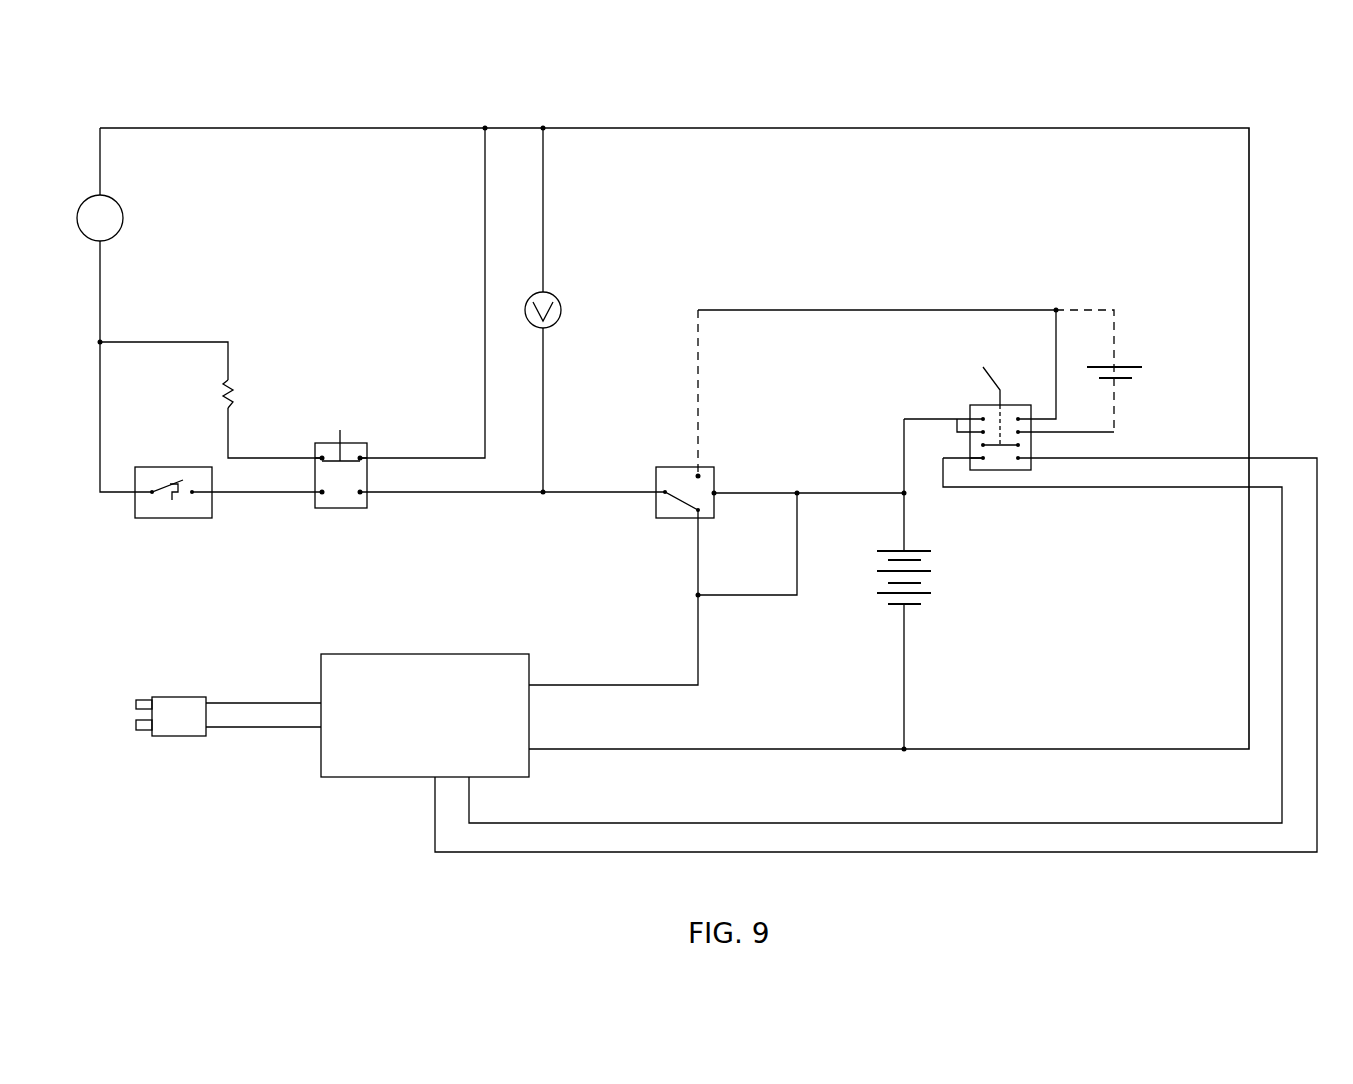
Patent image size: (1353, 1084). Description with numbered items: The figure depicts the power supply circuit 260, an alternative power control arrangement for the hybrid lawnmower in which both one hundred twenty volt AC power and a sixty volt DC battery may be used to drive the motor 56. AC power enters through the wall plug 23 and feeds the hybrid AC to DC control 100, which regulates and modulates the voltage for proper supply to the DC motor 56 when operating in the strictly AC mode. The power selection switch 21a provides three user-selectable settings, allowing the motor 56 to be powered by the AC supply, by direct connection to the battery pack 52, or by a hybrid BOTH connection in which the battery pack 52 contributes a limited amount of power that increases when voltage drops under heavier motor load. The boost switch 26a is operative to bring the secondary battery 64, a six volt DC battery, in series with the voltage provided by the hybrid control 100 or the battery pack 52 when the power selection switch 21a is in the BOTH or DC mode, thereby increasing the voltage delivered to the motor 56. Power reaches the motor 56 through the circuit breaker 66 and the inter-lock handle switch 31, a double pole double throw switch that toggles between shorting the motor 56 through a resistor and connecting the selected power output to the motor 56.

The power supply circuit 260 is at (988, 104).
The motor 56 is at (121, 217).
The circuit breaker 66 is at (210, 510).
The inter-lock handle switch 31 is at (355, 503).
The power selection switch 21a is at (708, 470).
The boost switch 26a is at (970, 415).
The secondary battery 64 is at (1140, 360).
The battery pack 52 is at (930, 600).
The hybrid AC to DC control 100 is at (455, 660).
The 120 VAC wall plug 23 is at (172, 731).